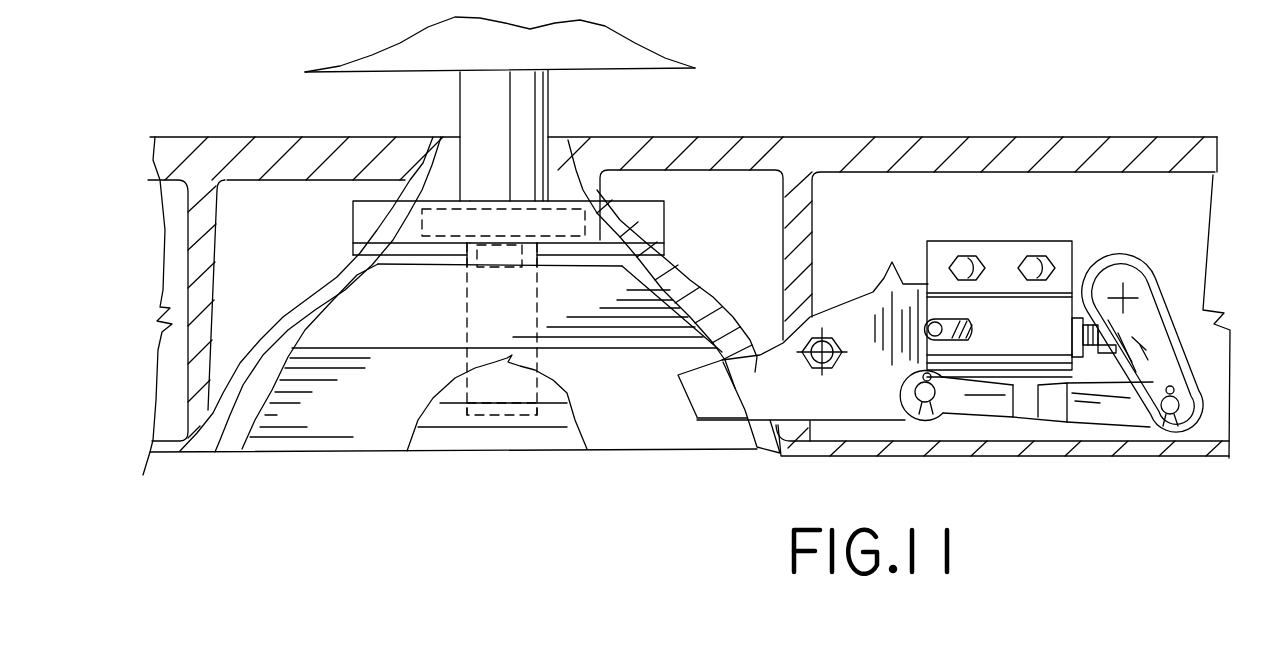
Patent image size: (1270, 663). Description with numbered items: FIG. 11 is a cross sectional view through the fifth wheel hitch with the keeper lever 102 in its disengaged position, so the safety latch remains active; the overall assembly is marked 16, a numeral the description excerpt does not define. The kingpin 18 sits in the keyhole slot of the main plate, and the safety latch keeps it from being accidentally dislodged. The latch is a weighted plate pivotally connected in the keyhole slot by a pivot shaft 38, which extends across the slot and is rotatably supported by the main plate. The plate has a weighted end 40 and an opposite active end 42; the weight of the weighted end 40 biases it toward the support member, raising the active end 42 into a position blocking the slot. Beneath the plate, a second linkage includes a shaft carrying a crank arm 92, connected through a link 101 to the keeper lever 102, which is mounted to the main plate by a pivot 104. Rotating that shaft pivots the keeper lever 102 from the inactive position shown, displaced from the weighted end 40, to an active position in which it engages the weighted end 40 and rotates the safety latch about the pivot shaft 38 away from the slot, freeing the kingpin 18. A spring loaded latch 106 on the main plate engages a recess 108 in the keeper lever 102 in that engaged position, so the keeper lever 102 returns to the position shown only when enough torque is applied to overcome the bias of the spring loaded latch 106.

The housing / apparatus 16 is at (686, 239).
The kingpin 18 is at (523, 118).
The pivot shaft 38 is at (369, 226).
The active end 42 is at (640, 217).
The weighted end 40 is at (516, 458).
The keeper lever 102 is at (800, 412).
The pivot 104 is at (852, 229).
The recess 108 is at (942, 279).
The spring loaded latch 106 is at (1051, 286).
The crank arm 92 is at (1176, 309).
The link 101 is at (1026, 473).